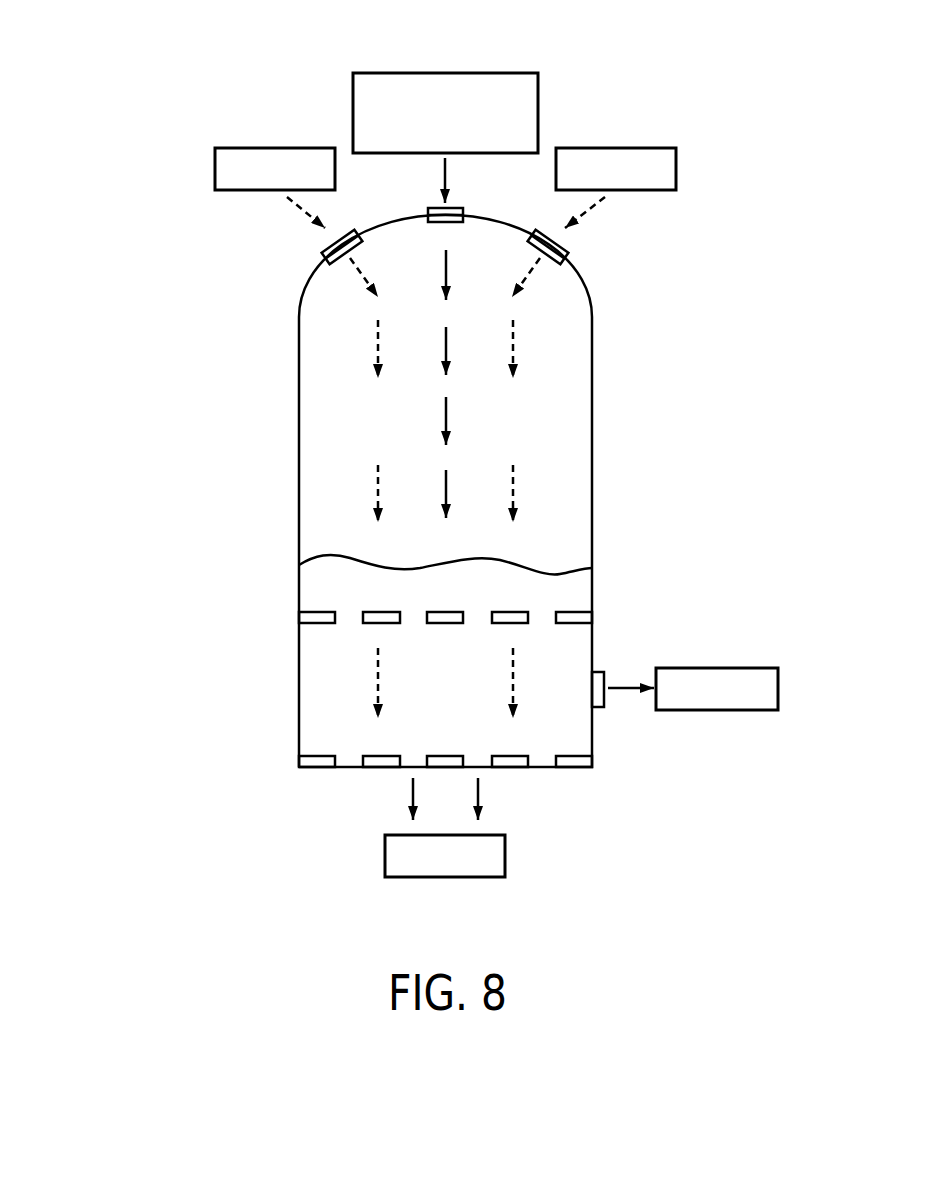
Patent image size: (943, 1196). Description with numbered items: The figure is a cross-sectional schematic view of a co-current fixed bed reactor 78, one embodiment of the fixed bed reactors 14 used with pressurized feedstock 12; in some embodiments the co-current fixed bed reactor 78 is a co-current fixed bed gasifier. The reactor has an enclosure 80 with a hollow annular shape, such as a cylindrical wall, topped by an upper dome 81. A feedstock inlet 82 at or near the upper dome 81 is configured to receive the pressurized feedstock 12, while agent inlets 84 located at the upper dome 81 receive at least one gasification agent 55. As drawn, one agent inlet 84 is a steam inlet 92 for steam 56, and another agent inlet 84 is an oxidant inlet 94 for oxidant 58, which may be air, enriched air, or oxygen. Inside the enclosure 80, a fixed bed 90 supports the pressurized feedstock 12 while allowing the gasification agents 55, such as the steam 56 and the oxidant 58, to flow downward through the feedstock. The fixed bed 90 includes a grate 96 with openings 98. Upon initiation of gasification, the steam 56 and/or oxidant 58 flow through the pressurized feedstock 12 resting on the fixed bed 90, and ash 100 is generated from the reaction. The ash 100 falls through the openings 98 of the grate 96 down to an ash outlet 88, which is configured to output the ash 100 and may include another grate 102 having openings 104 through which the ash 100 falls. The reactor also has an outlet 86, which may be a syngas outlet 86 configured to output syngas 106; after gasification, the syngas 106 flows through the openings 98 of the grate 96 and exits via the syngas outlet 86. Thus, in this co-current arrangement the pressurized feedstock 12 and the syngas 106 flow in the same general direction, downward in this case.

The pressurized feedstock 12 is at (447, 73).
The fixed bed reactor 14 is at (185, 318).
The gasification agent 55 is at (237, 122).
The steam 56 is at (215, 168).
The oxidant 58 is at (676, 168).
The co-current fixed bed reactor 78 is at (298, 443).
The enclosure 80 is at (298, 492).
The upper dome 81 is at (577, 272).
The feedstock inlet 82 is at (449, 208).
The agent inlets 84 is at (325, 243).
The syngas outlet 86 is at (597, 672).
The ash outlet 88 is at (405, 770).
The fixed bed 90 is at (317, 628).
The steam inlet 92 is at (340, 233).
The oxidant inlet 94 is at (547, 232).
The grate 96 is at (378, 626).
The openings 98 is at (410, 628).
The ash 100 is at (505, 857).
The grate 102 is at (317, 768).
The openings 104 is at (351, 770).
The syngas 106 is at (718, 668).